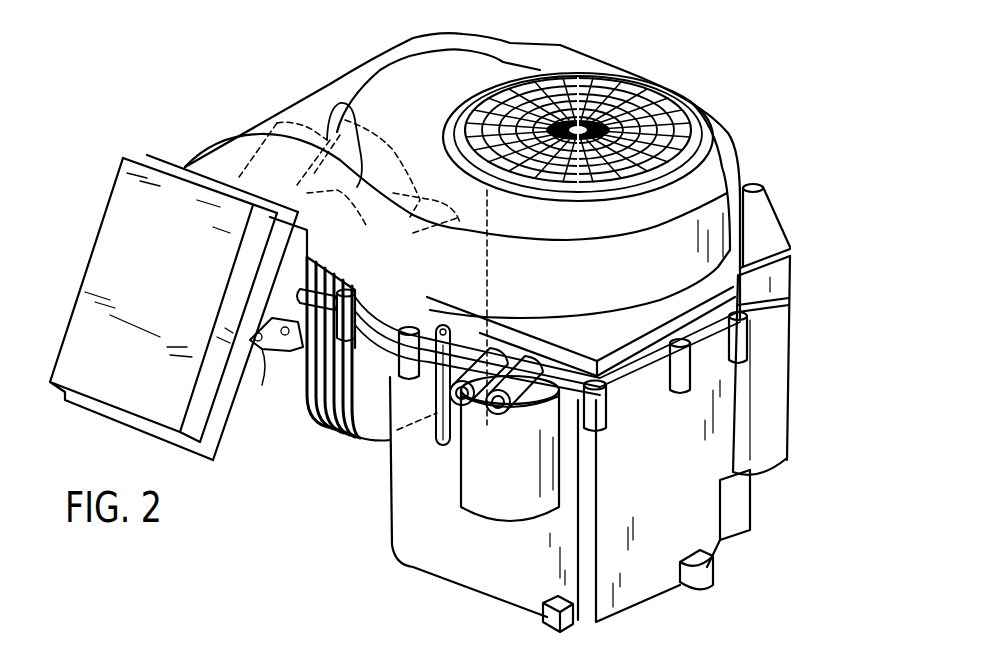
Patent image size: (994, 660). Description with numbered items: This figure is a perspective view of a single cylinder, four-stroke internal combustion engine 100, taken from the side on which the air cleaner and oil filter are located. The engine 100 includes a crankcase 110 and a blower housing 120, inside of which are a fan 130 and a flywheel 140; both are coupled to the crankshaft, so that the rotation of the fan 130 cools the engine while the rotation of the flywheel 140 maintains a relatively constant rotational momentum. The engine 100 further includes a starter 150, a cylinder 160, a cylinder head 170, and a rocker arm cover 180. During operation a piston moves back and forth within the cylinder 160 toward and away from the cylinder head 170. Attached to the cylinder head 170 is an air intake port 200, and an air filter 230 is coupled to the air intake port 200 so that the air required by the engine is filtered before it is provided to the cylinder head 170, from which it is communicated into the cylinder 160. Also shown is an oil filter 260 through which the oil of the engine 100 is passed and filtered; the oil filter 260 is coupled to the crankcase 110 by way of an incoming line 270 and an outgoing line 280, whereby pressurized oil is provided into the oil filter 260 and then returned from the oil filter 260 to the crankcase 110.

The single cylinder internal combustion engine 100 is at (277, 73).
The crankcase 110 is at (457, 581).
The blower housing 120 is at (583, 72).
The fan 130 is at (479, 190).
The flywheel 140 is at (713, 110).
The starter 150 is at (777, 470).
The cylinder 160 is at (333, 430).
The cylinder head 170 is at (283, 355).
The rocker arm cover 180 is at (270, 113).
The air intake port 200 is at (260, 352).
The air filter 230 is at (113, 422).
The oil filter 260 is at (517, 513).
The incoming line 270 is at (472, 372).
The outgoing line 280 is at (520, 410).